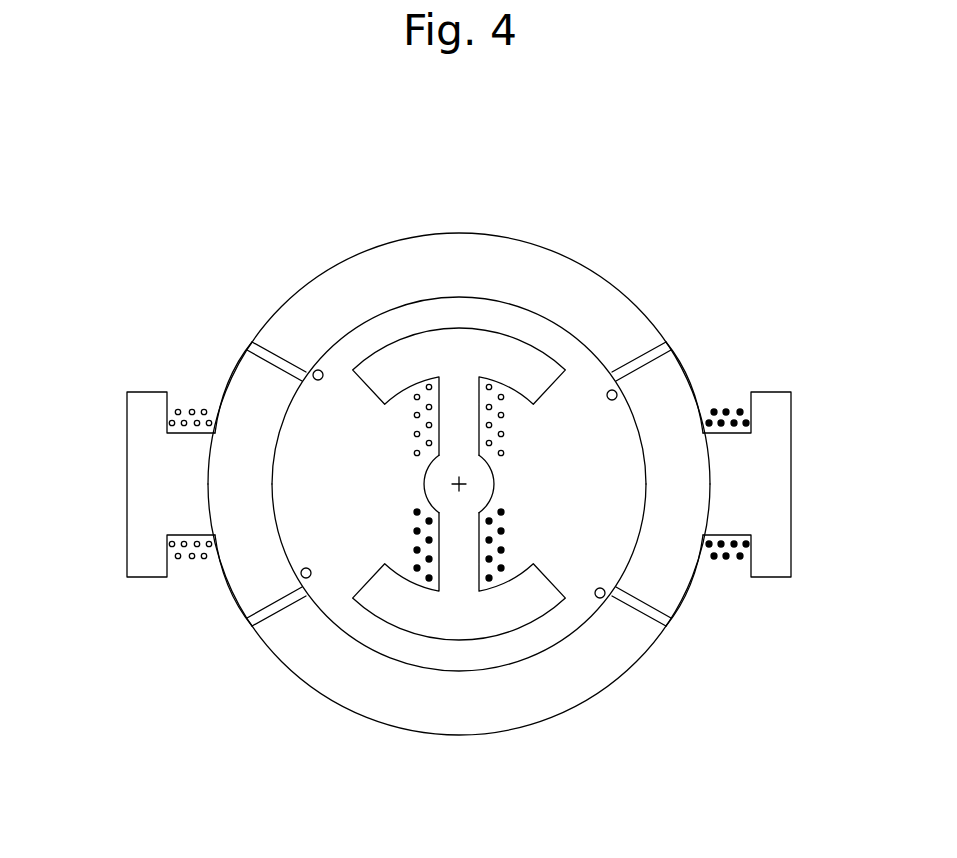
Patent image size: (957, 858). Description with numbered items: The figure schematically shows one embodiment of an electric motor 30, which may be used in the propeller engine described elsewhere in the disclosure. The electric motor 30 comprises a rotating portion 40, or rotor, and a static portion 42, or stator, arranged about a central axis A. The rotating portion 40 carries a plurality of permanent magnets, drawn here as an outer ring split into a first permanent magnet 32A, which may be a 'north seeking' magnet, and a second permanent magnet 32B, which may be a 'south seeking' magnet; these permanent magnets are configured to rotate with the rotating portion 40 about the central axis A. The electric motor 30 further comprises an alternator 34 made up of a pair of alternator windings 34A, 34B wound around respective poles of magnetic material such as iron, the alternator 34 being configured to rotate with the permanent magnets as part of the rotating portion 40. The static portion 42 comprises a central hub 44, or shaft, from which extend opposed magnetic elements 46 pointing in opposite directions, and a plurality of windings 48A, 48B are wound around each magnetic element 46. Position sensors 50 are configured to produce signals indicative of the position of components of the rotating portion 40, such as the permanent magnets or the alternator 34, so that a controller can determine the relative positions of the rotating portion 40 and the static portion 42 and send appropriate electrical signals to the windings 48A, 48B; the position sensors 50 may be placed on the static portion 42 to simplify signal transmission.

The electric motor 30 is at (198, 211).
The first permanent magnet 32A is at (540, 283).
The second permanent magnet 32B is at (535, 693).
The alternator 34 is at (205, 480).
The alternator winding 34A is at (188, 407).
The alternator winding 34B is at (728, 408).
The rotating portion 40 is at (662, 347).
The static portion 42 is at (350, 436).
The hub 44 is at (497, 479).
The magnetic element 46 is at (467, 332).
The winding 48A is at (505, 428).
The winding 48B is at (508, 541).
The position sensor 50 is at (322, 371).
The central axis A is at (457, 484).